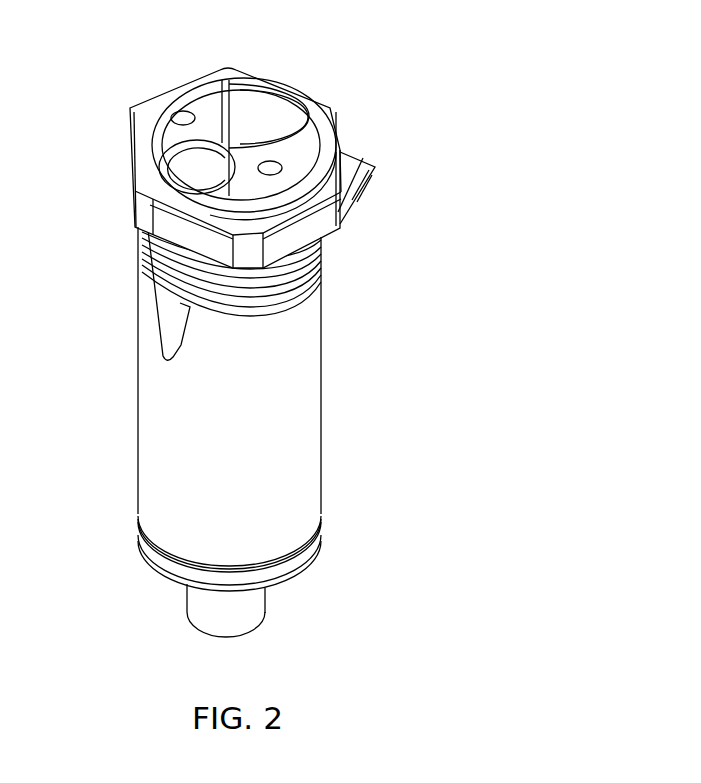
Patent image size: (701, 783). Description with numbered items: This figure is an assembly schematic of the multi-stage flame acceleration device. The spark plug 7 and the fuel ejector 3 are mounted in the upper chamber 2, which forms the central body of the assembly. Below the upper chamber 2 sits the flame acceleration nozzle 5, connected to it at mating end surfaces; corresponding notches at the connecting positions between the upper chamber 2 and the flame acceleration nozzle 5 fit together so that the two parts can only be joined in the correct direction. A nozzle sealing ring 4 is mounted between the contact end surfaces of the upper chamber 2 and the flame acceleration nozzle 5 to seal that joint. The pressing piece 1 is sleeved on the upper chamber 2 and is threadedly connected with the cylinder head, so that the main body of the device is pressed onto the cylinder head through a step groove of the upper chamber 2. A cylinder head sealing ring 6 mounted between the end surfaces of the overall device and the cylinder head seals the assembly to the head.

The pressing piece 1 is at (307, 104).
The upper chamber 2 is at (262, 386).
The fuel ejector 3 is at (372, 166).
The nozzle sealing ring 4 is at (227, 570).
The flame acceleration nozzle 5 is at (207, 610).
The cylinder head sealing ring 6 is at (303, 561).
The spark plug 7 is at (190, 312).